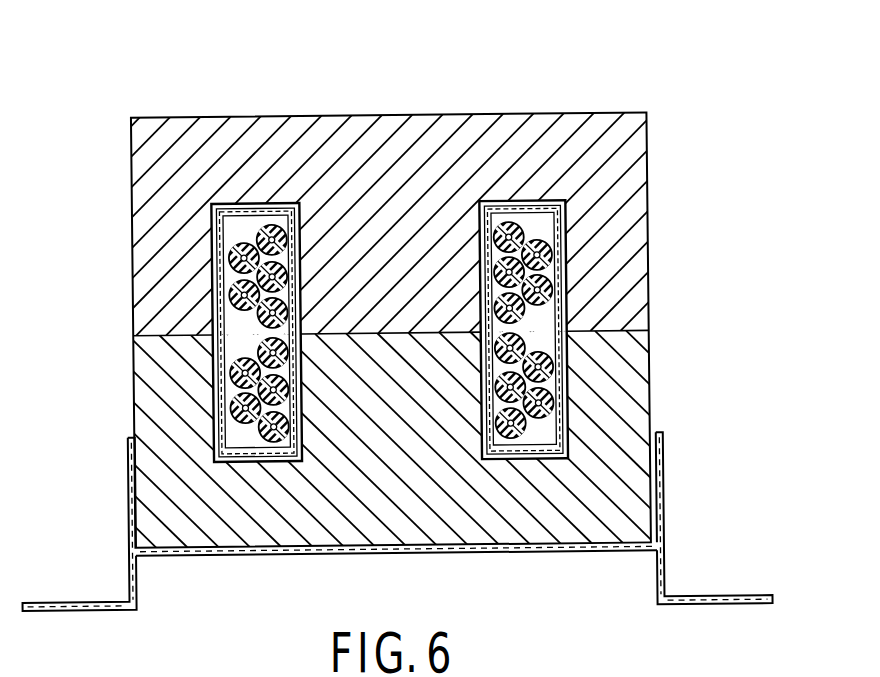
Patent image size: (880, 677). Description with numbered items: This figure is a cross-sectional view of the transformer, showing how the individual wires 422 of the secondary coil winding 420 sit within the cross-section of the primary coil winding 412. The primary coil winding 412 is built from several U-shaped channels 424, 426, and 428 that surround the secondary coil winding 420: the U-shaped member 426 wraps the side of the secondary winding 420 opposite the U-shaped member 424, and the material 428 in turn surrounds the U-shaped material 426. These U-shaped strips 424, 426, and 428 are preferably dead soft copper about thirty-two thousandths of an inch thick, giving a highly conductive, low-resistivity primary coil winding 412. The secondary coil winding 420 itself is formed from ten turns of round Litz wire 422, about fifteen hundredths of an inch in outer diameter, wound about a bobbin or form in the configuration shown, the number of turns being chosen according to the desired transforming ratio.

The primary coil winding 412 is at (553, 200).
The secondary coil winding 420 is at (550, 228).
The wire 422 is at (525, 258).
The U-shaped channel 424 is at (489, 200).
The U-shaped member 426 is at (516, 200).
The U-shaped material 428 is at (570, 297).